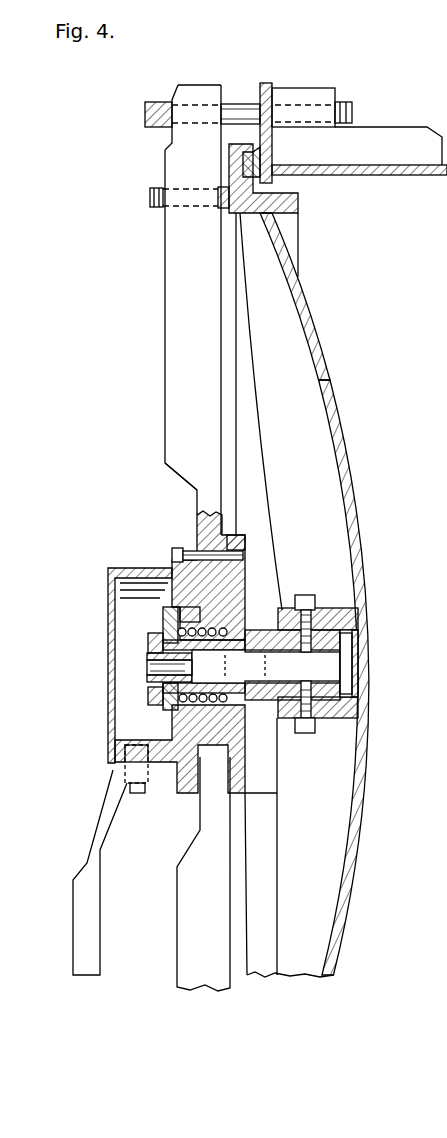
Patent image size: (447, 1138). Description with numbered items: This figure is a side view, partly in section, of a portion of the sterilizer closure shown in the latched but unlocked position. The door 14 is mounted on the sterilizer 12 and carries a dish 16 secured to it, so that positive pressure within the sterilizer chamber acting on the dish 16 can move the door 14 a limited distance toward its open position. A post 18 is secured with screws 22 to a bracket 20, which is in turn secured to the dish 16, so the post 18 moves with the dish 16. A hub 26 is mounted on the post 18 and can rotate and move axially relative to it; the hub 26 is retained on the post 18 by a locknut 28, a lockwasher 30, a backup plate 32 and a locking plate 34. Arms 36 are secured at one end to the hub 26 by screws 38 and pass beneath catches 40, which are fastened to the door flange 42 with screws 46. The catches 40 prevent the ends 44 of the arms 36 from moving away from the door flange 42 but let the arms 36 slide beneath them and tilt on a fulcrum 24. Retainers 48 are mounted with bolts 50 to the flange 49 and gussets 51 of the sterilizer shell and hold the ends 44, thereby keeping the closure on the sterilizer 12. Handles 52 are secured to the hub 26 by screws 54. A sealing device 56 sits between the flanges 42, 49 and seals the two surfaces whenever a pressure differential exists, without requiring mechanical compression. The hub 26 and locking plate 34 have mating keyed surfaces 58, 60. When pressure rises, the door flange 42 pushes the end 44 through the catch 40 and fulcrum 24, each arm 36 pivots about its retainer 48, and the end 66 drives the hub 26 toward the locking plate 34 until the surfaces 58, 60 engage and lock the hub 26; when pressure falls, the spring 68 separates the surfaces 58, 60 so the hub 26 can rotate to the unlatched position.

The sterilizer 12 is at (445, 180).
The door 14 is at (315, 312).
The dish 16 is at (335, 422).
The post 18 is at (322, 648).
The bracket 20 is at (343, 612).
The screws 22 is at (322, 562).
The fulcrum 24 is at (226, 215).
The hub 26 is at (108, 567).
The locknut 28 is at (147, 662).
The lockwasher 30 is at (178, 632).
The backup plate 32 is at (170, 600).
The locking plate 34 is at (150, 690).
The arms 36 is at (172, 320).
The screws 38 is at (172, 552).
The catches 40 is at (165, 215).
The door flange 42 is at (299, 205).
The ends 44 is at (180, 150).
The screws 46 is at (150, 200).
The retainers 48 is at (150, 118).
The flange 49 is at (266, 85).
The bolts 50 is at (355, 105).
The gussets 51 is at (318, 93).
The handles 52 is at (90, 862).
The screws 54 is at (140, 797).
The sealing device 56 is at (262, 160).
The surface 58 is at (262, 735).
The surface 60 is at (168, 706).
The end 66 is at (198, 486).
The spring 68 is at (165, 615).